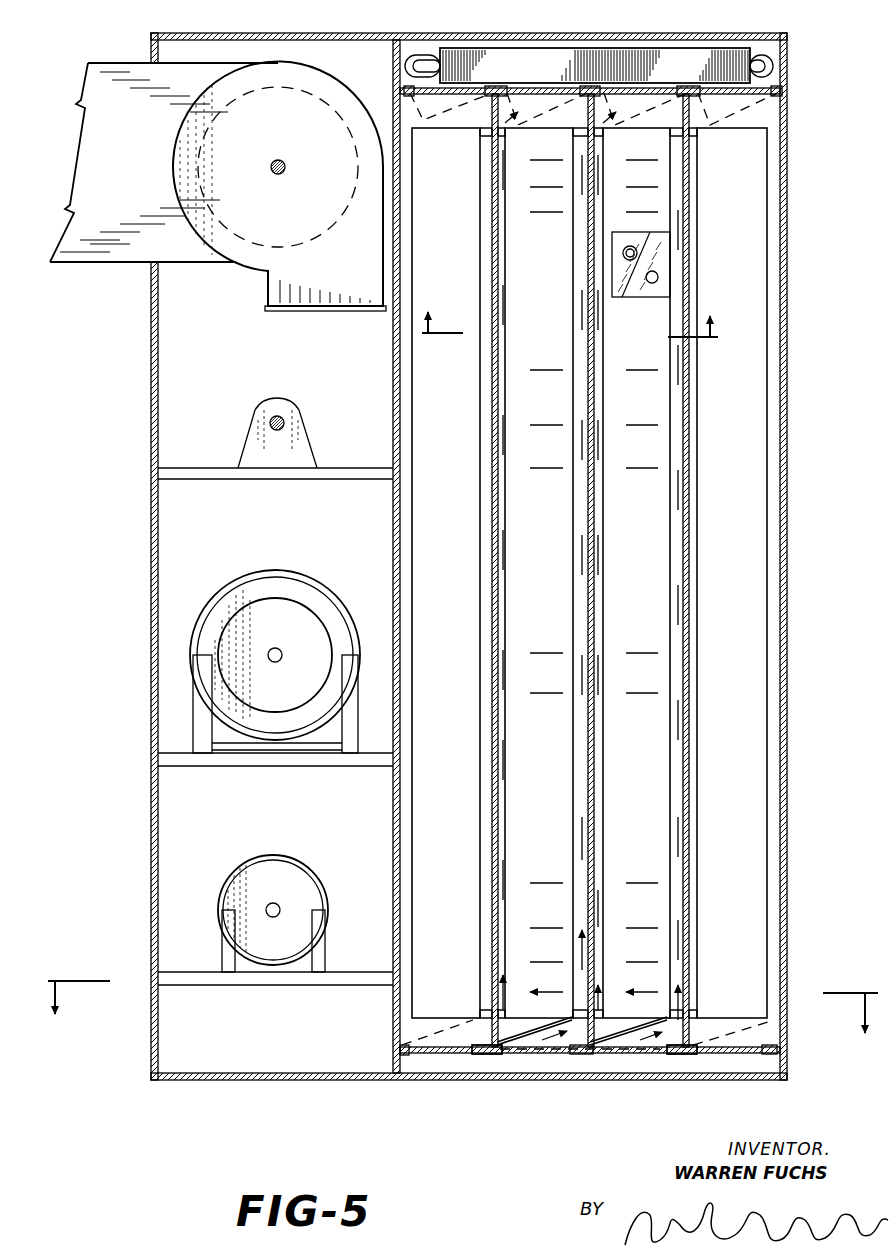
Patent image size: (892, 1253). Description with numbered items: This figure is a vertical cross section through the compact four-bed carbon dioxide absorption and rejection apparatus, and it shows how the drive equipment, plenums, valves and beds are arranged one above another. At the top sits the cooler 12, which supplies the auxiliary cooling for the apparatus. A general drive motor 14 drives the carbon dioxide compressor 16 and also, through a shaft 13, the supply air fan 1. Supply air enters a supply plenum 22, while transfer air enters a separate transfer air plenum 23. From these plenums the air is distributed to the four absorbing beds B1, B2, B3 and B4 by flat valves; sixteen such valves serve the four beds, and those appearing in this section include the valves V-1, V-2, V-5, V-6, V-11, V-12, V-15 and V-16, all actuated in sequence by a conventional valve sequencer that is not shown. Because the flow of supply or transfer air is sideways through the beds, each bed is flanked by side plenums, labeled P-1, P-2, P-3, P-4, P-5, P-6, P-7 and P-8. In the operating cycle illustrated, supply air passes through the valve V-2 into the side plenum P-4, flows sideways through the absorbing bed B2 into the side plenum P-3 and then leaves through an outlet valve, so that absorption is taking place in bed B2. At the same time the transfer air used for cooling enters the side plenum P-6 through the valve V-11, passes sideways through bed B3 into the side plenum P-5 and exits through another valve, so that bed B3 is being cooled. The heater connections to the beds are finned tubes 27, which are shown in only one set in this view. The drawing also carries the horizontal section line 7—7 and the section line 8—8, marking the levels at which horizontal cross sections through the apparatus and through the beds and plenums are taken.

The supply air fan 1 is at (344, 266).
The cooler 12 is at (538, 76).
The shaft 13 is at (283, 421).
The general drive motor 14 is at (300, 640).
The CO2 compressor 16 is at (296, 897).
The supply plenum 22 is at (485, 1058).
The transfer air plenum 23 is at (683, 1066).
The finned tubes 27 is at (660, 278).
The section line 7— 7 is at (463, 1007).
The section line 8— 8 is at (574, 322).
The absorbing bed B1 is at (456, 414).
The absorbing bed B2 is at (552, 414).
The absorbing bed B3 is at (646, 414).
The absorbing bed B4 is at (744, 414).
The side plenum P-1 is at (402, 792).
The side plenum P-2 is at (488, 812).
The side plenum P-3 is at (500, 792).
The side plenum P-4 is at (584, 812).
The side plenum P-5 is at (596, 792).
The side plenum P-6 is at (680, 812).
The side plenum P-7 is at (692, 792).
The side plenum P-8 is at (776, 812).
The distribution valve V-1 is at (450, 1050).
The distribution valve V-2 is at (527, 1042).
The distribution valve V-5 is at (436, 90).
The distribution valve V-6 is at (547, 90).
The distribution valve V-11 is at (625, 1042).
The distribution valve V-12 is at (723, 1050).
The distribution valve V-15 is at (648, 90).
The distribution valve V-16 is at (737, 90).